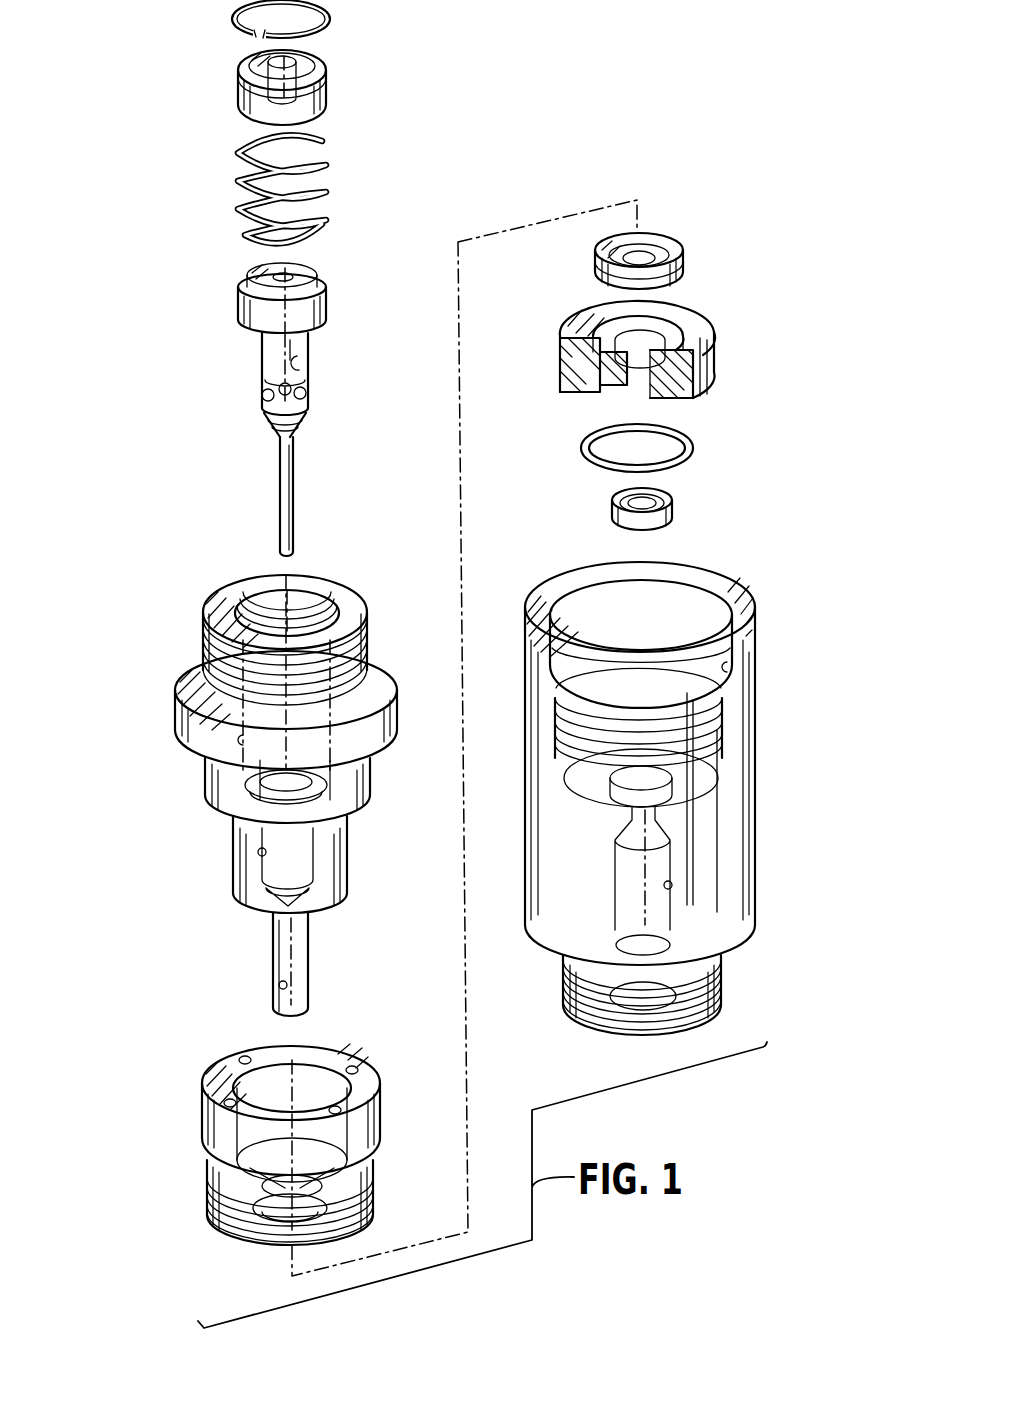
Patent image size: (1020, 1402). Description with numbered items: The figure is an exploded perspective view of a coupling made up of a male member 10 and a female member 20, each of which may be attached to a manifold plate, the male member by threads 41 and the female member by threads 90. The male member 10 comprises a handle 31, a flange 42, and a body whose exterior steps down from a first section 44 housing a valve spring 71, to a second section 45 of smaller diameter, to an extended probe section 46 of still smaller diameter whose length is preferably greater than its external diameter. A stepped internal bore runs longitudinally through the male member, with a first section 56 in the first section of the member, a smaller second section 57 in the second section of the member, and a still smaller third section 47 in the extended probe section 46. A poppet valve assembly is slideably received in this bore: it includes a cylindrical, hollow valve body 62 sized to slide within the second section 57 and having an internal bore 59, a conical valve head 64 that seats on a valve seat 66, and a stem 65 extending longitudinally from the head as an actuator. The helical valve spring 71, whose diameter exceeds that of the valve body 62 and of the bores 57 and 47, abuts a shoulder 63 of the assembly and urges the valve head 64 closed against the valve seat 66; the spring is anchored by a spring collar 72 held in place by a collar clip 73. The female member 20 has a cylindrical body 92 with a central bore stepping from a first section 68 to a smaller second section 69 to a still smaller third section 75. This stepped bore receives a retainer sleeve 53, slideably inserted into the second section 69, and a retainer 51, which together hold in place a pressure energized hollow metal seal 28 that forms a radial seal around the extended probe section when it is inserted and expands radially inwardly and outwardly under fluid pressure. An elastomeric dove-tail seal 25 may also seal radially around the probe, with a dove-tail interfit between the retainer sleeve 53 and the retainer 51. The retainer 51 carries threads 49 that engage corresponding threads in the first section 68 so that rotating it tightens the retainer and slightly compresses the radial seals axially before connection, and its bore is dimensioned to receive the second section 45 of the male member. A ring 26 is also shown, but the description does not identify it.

The male member 10 is at (160, 698).
The female member 20 is at (772, 718).
The dove-tail seal 25 is at (685, 265).
The O-ring 26 is at (693, 447).
The hollow metal seal 28 is at (673, 512).
The handle 31 is at (225, 600).
The threads 41 is at (205, 650).
The flange 42 is at (178, 723).
The first section 44 is at (207, 790).
The second section 45 is at (233, 880).
The extended probe section 46 is at (272, 945).
The third section 47 is at (283, 984).
The threads 49 is at (210, 1195).
The retainer 51 is at (210, 1140).
The retainer sleeve 53 is at (714, 360).
The first section 56 is at (243, 740).
The second section 57 is at (258, 852).
The internal bore 59 is at (299, 366).
The valve body 62 is at (262, 370).
The shoulder 63 is at (238, 305).
The valve head 64 is at (278, 430).
The stem 65 is at (282, 515).
The valve seat 66 is at (265, 890).
The first section 68 is at (728, 667).
The second section 69 is at (718, 765).
The valve spring 71 is at (240, 210).
The spring collar 72 is at (240, 90).
The collar clip 73 is at (232, 22).
The third section 75 is at (670, 885).
The threads 90 is at (720, 995).
The cylindrical body 92 is at (758, 818).